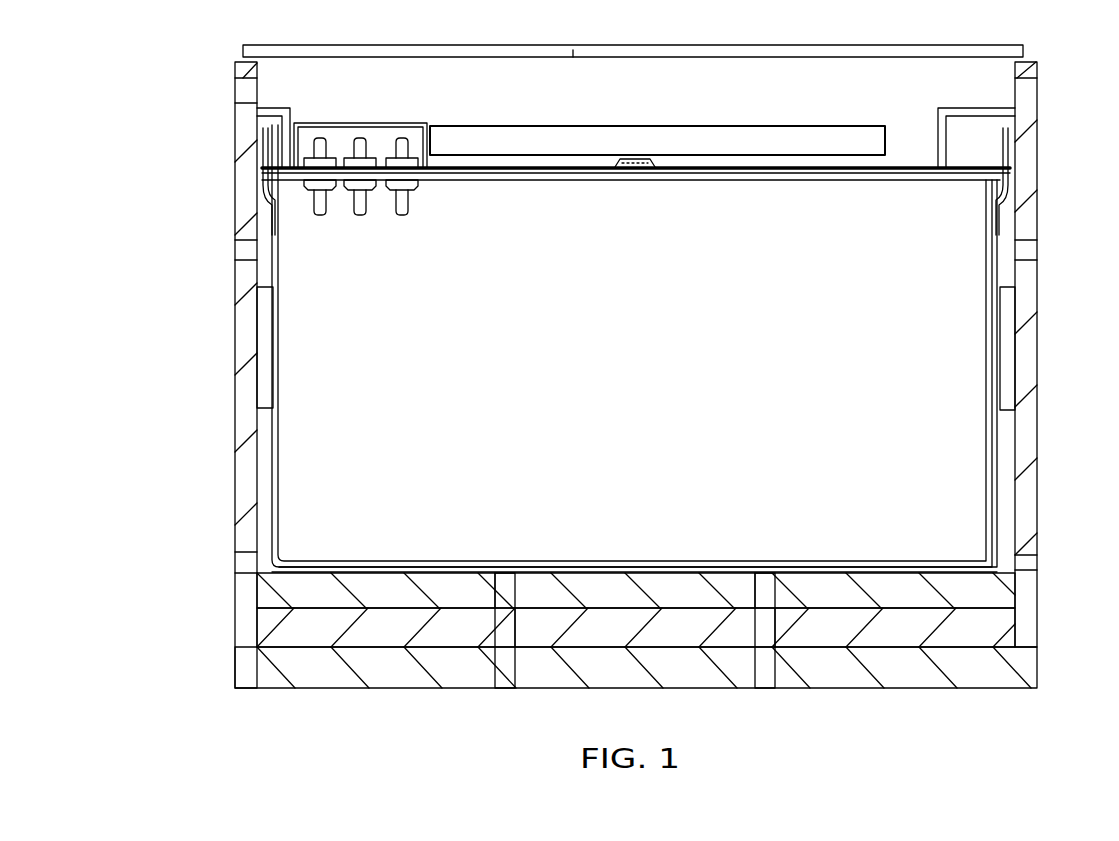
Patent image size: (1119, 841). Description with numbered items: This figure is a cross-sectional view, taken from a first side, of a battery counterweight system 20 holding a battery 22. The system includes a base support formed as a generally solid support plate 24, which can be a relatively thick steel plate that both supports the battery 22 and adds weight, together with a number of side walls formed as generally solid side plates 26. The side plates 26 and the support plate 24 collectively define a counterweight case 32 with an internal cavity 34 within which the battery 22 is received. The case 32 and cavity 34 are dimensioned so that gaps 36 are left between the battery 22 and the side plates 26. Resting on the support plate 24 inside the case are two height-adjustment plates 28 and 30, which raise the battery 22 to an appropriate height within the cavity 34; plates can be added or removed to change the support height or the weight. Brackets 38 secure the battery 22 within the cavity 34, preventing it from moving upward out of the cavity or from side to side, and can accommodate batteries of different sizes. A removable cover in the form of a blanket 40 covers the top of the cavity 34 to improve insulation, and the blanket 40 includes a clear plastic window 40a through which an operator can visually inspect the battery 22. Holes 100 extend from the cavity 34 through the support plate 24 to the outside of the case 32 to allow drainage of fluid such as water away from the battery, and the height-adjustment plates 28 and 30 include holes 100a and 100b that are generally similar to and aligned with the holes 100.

The counterweight system 20 is at (193, 106).
The battery 22 is at (372, 106).
The support plate 24 is at (240, 662).
The side plates 26 is at (235, 405).
The height-adjustment plate 28 is at (270, 625).
The height-adjustment plate 30 is at (262, 590).
The counterweight case 32 is at (185, 287).
The internal cavity 34 is at (858, 103).
The gaps 36 is at (282, 464).
The brackets 38 is at (270, 108).
The blanket 40 is at (945, 45).
The clear plastic window 40a is at (557, 45).
The holes 100 is at (505, 686).
The hole 100a is at (510, 630).
The hole 100b is at (505, 590).